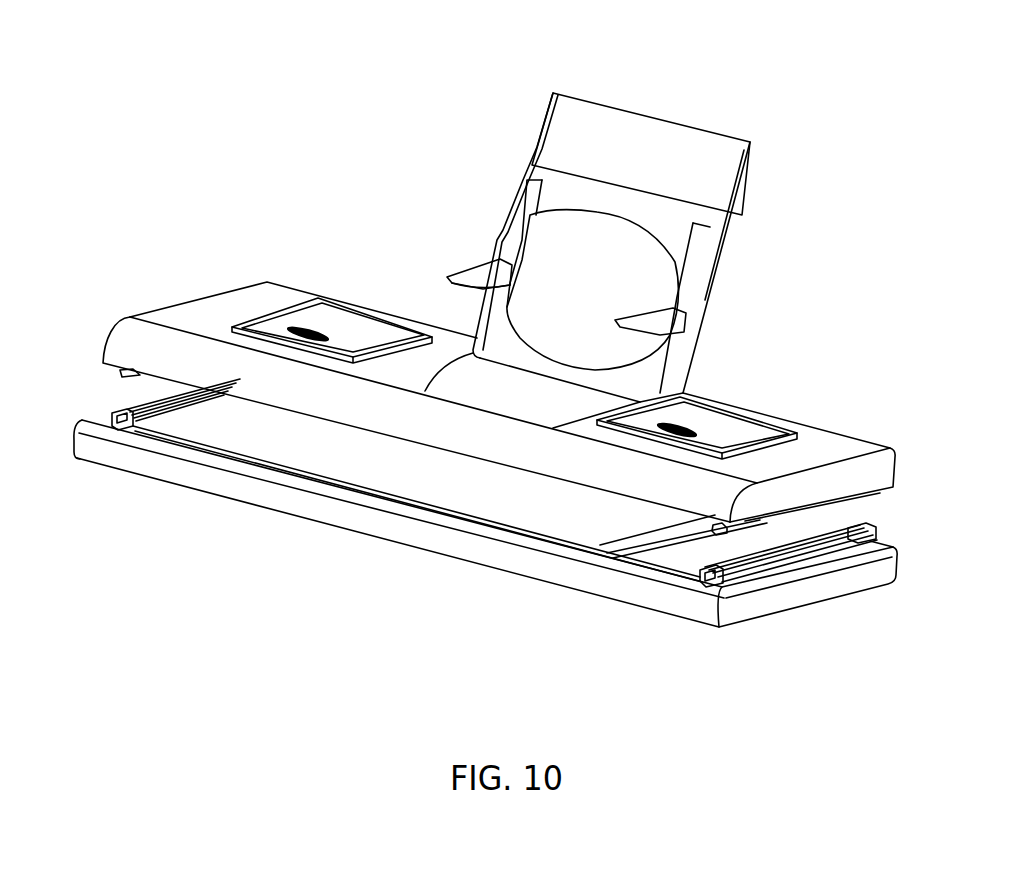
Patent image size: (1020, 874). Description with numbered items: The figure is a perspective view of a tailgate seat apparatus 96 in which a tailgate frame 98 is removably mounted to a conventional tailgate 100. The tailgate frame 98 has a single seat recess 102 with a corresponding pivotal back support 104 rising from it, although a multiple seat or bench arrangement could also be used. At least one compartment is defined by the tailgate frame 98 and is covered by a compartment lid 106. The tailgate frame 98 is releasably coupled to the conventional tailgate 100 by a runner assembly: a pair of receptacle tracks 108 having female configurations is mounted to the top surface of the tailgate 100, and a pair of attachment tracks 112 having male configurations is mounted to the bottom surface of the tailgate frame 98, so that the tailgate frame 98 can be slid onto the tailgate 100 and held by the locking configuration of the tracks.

The tailgate seat apparatus 96 is at (307, 64).
The tailgate frame 98 is at (184, 242).
The conventional tailgate 100 is at (259, 535).
The seat recess 102 is at (532, 397).
The pivotal back support 104 is at (682, 110).
The compartment lid 106 is at (353, 316).
The receptacle tracks 108 is at (124, 412).
The attachment tracks 112 is at (120, 375).